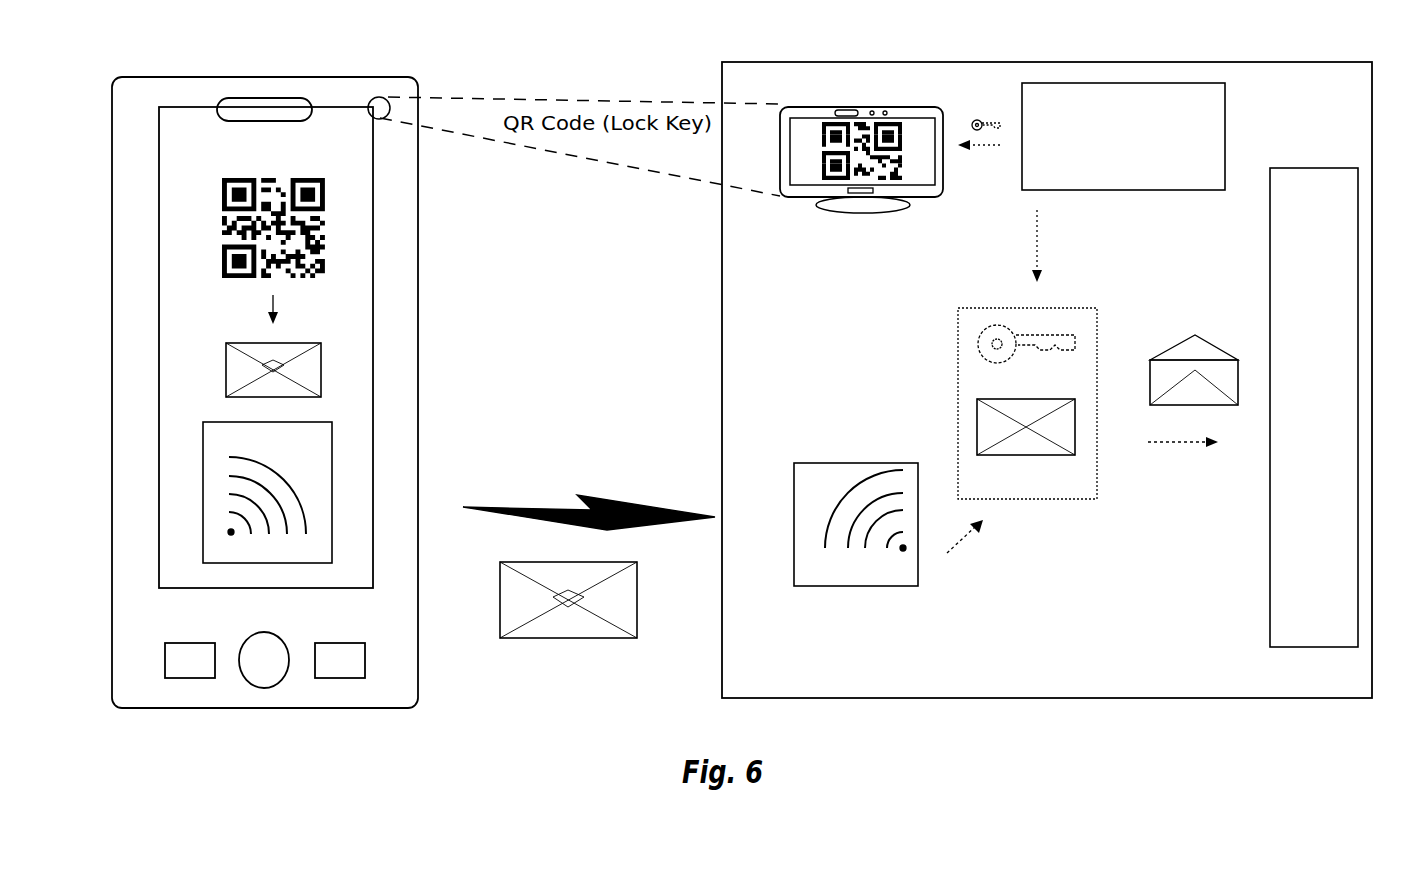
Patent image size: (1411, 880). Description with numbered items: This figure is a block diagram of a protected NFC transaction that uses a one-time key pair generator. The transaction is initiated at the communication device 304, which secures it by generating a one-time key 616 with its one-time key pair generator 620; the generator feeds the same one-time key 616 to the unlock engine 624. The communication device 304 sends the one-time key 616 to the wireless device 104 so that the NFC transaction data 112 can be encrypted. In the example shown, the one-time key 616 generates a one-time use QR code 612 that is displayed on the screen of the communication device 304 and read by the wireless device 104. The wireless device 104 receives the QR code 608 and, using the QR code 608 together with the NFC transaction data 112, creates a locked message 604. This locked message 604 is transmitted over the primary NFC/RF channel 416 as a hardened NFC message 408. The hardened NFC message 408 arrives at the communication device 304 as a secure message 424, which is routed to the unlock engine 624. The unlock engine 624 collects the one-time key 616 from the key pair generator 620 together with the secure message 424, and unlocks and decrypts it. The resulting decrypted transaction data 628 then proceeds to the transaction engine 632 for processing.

The wireless device 104 is at (172, 77).
The QR code 608 is at (256, 180).
The locked message 604 is at (240, 346).
The NFC transaction data 112 is at (330, 404).
The NFC/RF channel 416 is at (548, 514).
The hardened NFC message 408 is at (568, 640).
The communication device 304 is at (1050, 62).
The one-time use QR code 612 is at (816, 204).
The one-time key 616 is at (1002, 124).
The one-time key pair generator 620 is at (1200, 190).
The unlock engine 624 is at (958, 348).
The decrypted transaction data 628 is at (1194, 335).
The transaction engine 632 is at (1314, 168).
The secure message 424 is at (870, 586).